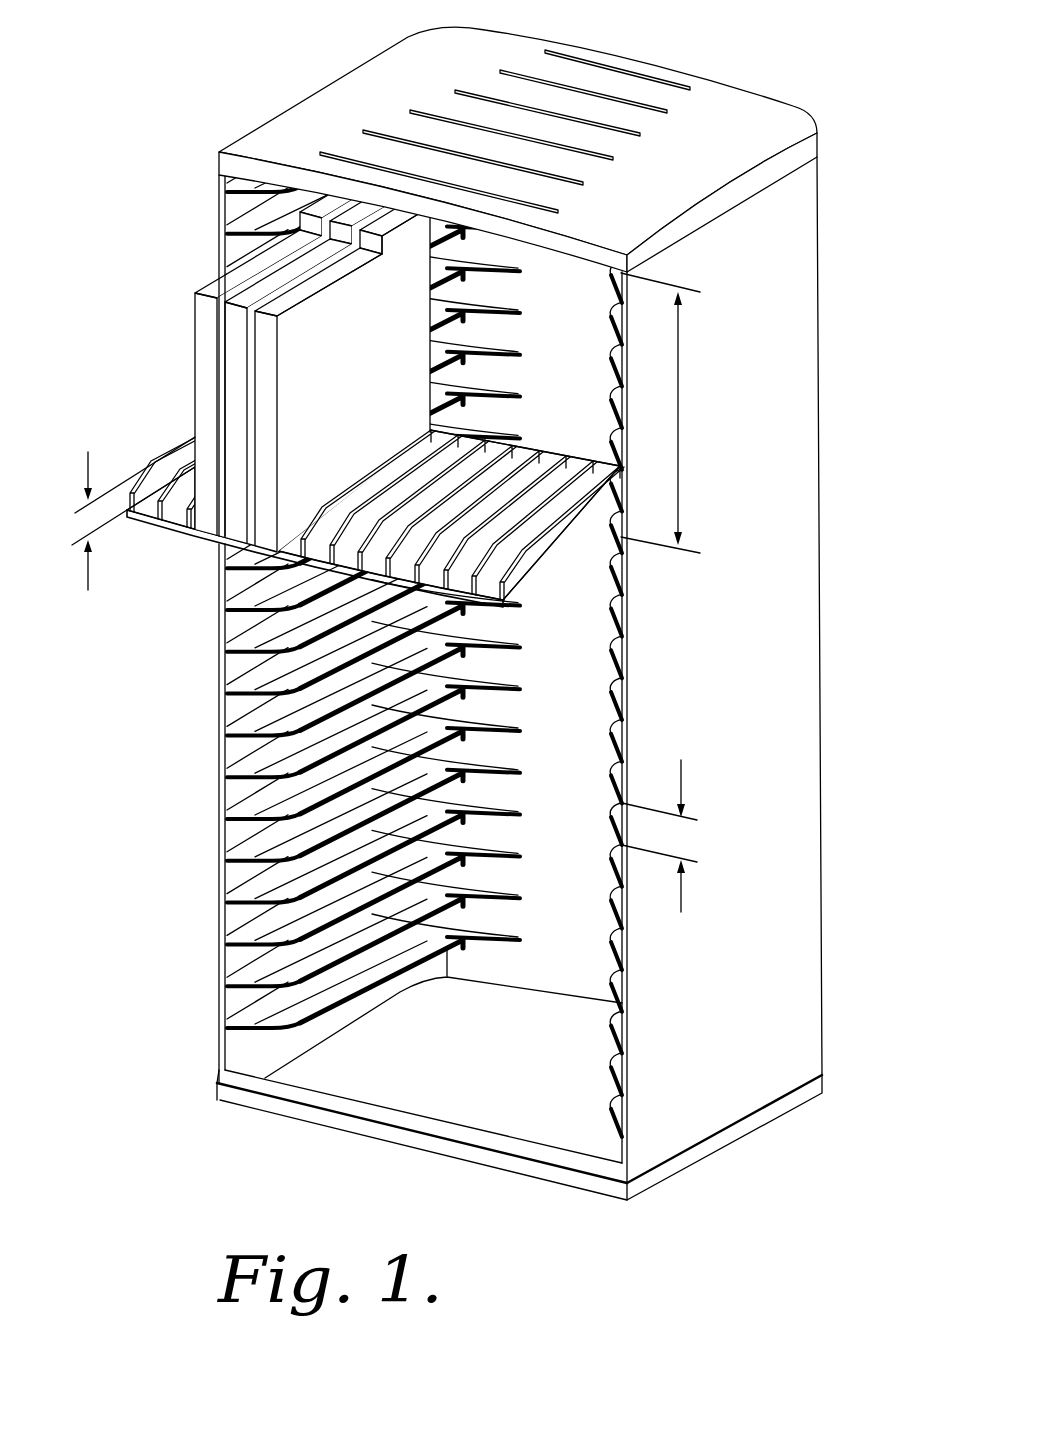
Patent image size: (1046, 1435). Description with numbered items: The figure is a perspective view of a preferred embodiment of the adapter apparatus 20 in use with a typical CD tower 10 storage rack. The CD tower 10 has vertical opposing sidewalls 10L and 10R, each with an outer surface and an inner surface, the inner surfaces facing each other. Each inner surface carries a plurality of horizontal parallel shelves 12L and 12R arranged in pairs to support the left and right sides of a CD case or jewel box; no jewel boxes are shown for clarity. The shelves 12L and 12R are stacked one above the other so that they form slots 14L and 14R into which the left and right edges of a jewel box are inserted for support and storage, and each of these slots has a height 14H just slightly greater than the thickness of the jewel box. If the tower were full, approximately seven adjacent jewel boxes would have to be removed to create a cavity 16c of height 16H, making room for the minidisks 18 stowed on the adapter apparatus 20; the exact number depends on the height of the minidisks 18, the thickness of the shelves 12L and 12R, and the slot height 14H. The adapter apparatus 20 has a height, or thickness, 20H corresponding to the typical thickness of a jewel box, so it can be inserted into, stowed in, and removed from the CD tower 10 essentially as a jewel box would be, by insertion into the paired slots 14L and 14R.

The CD tower 10 is at (243, 116).
The left vertical sidewall 10L is at (223, 660).
The right vertical sidewall 10R is at (767, 522).
The left shelves 12L is at (347, 620).
The right shelves 12R is at (676, 751).
The left slots 14L is at (245, 832).
The right slots 14R is at (622, 677).
The slot height 14H is at (667, 818).
The cavity 16c is at (550, 257).
The cavity height 16H is at (664, 413).
The minidisks 18 is at (293, 343).
The adapter apparatus 20 is at (345, 406).
The adapter height 20H is at (131, 501).